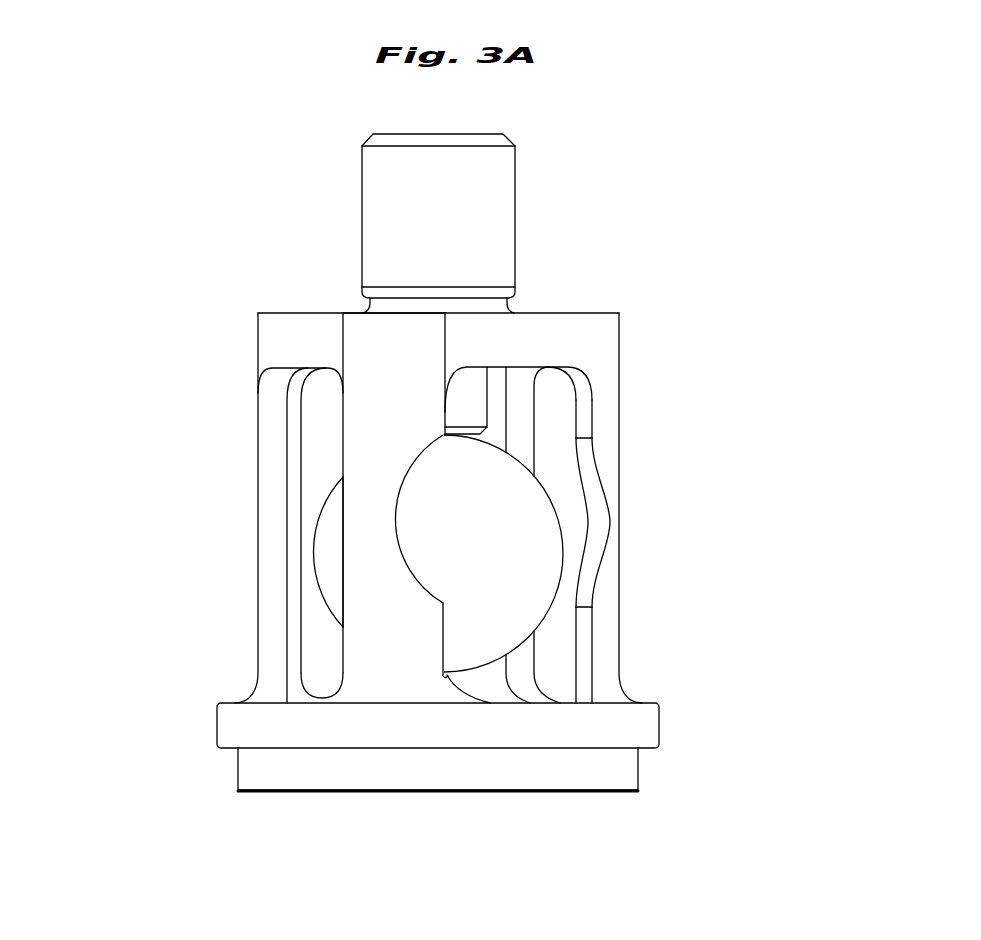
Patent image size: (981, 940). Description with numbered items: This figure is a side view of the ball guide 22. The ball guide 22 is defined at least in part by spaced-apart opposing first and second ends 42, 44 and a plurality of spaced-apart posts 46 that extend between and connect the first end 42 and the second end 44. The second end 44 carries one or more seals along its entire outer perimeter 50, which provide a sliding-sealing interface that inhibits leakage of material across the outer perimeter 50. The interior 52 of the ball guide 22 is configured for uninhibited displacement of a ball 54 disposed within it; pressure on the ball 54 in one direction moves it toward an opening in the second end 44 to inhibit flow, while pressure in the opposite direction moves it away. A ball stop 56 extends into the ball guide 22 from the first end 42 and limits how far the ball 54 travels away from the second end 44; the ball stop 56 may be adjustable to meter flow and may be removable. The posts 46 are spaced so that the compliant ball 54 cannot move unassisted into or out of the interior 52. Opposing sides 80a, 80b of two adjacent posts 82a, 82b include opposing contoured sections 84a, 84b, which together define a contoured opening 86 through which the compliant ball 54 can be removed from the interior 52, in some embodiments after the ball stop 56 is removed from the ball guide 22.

The ball guide 22 is at (654, 202).
The first end 42 is at (315, 313).
The second end 44 is at (192, 726).
The posts 46 is at (358, 594).
The outer perimeter 50 is at (215, 730).
The interior 52 is at (325, 430).
The ball 54 is at (479, 553).
The ball stop 56 is at (489, 387).
The opposing side 80a is at (440, 643).
The opposing side 80b is at (582, 661).
The adjacent post 82a is at (394, 355).
The adjacent post 82b is at (607, 605).
The contoured section 84a is at (392, 512).
The contoured section 84b is at (596, 487).
The contoured opening 86 is at (405, 583).